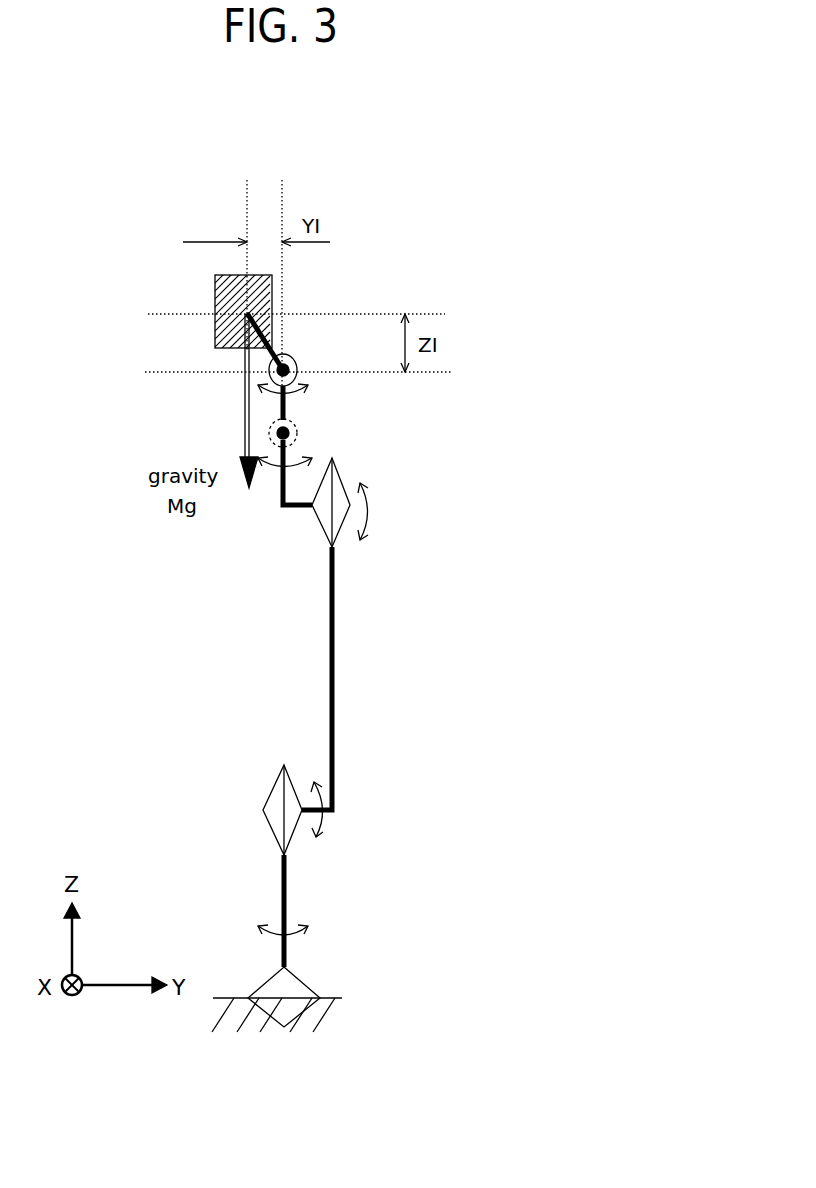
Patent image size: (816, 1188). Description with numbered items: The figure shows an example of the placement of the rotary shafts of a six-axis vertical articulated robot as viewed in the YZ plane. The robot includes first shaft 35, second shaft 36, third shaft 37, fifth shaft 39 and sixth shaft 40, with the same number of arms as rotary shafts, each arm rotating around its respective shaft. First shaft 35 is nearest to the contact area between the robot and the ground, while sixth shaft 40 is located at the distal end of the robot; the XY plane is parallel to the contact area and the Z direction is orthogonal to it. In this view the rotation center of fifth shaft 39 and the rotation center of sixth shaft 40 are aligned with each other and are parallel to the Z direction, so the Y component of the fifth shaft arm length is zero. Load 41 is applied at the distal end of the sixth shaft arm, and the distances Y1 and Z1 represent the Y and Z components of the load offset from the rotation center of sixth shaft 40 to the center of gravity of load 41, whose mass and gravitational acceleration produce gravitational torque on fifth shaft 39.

The load 41 is at (212, 293).
The sixth shaft 40 is at (363, 381).
The fifth shaft 39 is at (305, 433).
The third shaft 37 is at (394, 517).
The second shaft 36 is at (380, 810).
The first shaft 35 is at (351, 911).